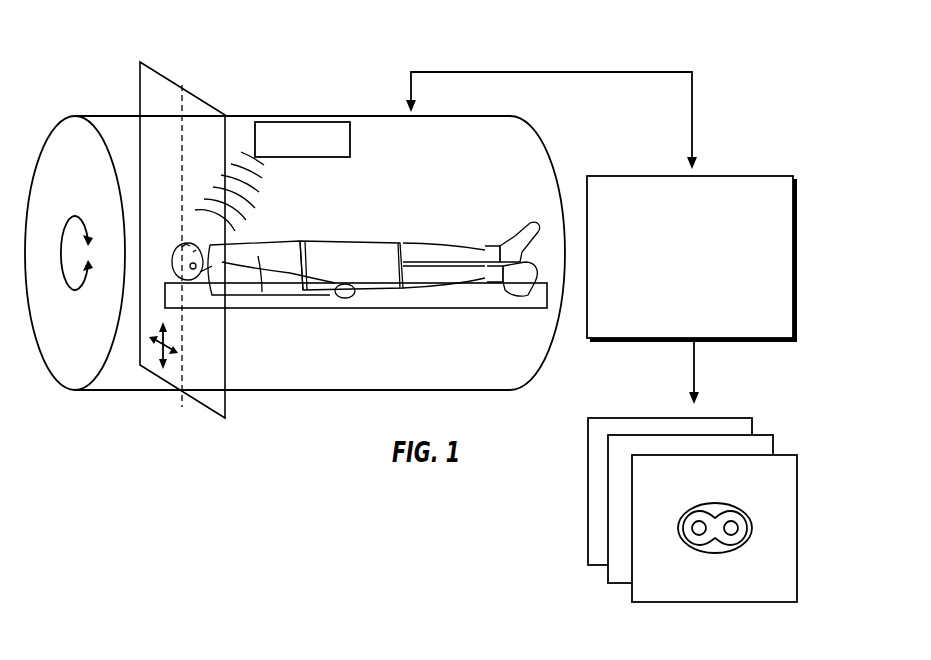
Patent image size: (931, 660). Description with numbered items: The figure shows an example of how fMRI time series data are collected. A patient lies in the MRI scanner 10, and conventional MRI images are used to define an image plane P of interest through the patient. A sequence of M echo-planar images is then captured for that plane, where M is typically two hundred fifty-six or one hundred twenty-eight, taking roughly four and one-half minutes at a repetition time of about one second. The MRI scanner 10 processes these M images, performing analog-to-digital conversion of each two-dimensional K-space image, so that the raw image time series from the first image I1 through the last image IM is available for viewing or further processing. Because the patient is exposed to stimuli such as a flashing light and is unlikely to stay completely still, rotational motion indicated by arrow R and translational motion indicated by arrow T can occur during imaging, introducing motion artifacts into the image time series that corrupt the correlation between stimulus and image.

The MRI scanner 10 is at (355, 45).
The image plane P is at (140, 80).
The arrow R (rotational motion) R is at (87, 253).
The arrow T (translational motion) T is at (162, 339).
The last echo-planar image of the time series IM is at (588, 450).
The first echo-planar image of the time series I1 is at (780, 453).